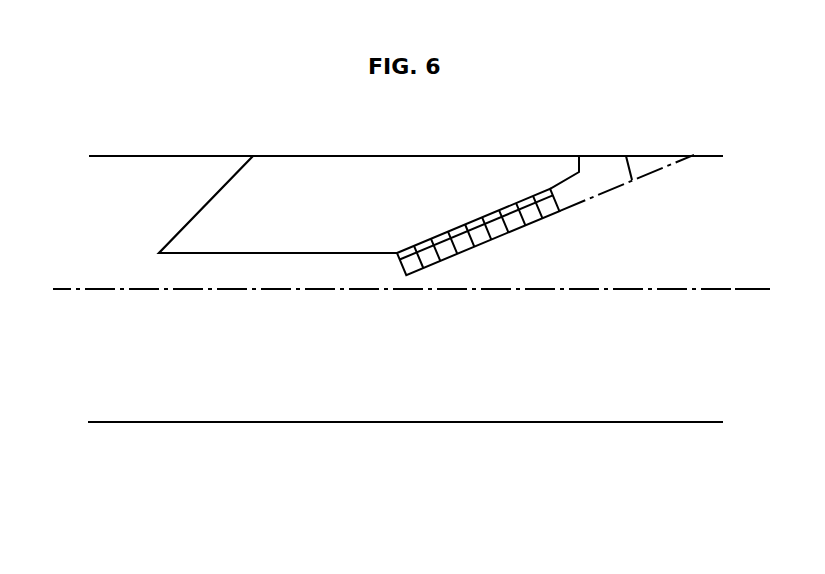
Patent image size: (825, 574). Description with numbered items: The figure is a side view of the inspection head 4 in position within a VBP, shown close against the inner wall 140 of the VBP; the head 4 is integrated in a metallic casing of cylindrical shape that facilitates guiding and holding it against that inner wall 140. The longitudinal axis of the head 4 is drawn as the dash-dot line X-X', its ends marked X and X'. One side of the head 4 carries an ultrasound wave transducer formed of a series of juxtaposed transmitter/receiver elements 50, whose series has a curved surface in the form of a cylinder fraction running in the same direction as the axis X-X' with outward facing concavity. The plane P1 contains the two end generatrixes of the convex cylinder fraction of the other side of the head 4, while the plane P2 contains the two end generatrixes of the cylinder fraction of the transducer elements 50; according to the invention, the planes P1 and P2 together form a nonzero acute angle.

The head 4 is at (383, 183).
The inner wall 140 is at (146, 156).
The transmitter/receiver elements 50 is at (428, 258).
The plane P1 is at (660, 156).
The plane P2 is at (668, 168).
The longitudinal axis X is at (411, 323).
The longitudinal axis X' is at (758, 323).